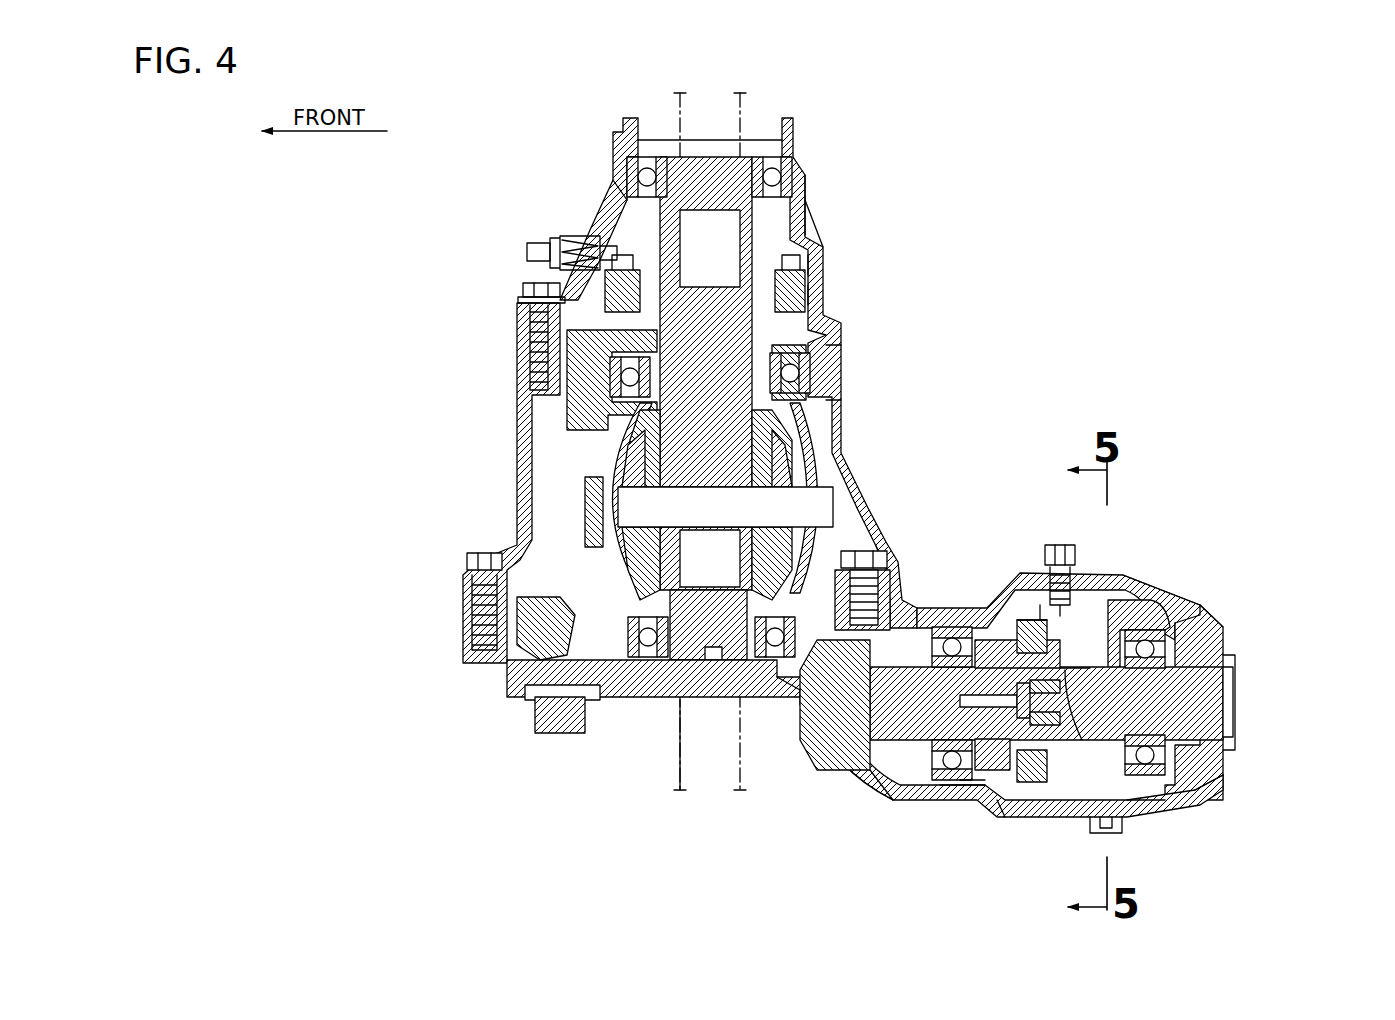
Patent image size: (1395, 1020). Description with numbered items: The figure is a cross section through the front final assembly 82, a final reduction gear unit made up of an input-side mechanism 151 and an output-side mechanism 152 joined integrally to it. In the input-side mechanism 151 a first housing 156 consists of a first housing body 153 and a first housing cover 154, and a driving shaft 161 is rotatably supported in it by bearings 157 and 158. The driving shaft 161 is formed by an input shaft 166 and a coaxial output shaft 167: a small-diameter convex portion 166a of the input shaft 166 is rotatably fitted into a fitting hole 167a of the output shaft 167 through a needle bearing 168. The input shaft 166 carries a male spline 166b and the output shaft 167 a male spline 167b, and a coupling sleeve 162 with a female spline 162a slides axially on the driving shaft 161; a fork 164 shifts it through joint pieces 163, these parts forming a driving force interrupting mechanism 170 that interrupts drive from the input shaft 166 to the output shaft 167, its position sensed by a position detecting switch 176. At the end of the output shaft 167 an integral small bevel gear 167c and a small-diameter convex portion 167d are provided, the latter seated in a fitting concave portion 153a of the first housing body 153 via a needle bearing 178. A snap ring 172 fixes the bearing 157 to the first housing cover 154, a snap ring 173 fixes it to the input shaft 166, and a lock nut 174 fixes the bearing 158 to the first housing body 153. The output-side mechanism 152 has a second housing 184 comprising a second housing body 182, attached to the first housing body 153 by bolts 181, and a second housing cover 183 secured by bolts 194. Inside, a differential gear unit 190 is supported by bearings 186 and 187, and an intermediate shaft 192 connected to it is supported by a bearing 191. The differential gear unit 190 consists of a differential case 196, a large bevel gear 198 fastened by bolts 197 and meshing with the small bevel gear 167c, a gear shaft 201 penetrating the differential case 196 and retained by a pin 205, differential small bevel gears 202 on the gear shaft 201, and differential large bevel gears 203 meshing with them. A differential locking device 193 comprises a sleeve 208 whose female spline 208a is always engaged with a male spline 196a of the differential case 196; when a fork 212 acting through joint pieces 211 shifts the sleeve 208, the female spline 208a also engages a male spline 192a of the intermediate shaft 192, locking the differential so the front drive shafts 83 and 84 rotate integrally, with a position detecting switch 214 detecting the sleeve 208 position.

The front final assembly 82 is at (378, 302).
The front drive shaft 83 is at (680, 785).
The front drive shaft 84 is at (676, 97).
The input-side mechanism 151 is at (1130, 582).
The output-side mechanism 152 is at (852, 350).
The first housing body 153 is at (850, 775).
The fitting concave portion 153a is at (800, 695).
The first housing cover 154 is at (1205, 803).
The first housing 156 is at (1232, 640).
The bearing 157 is at (1195, 605).
The bearing 158 is at (892, 612).
The driving shaft 161 is at (1235, 690).
The coupling sleeve 162 is at (1045, 790).
The female spline 162a is at (1065, 782).
The joint pieces 163 is at (1030, 620).
The fork 164 is at (1035, 620).
The input shaft 166 is at (1208, 710).
The small-diameter convex portion 166a is at (1003, 815).
The male spline 166b is at (1115, 822).
The output shaft 167 is at (920, 770).
The fitting hole 167a is at (1080, 660).
The male spline 167b is at (962, 790).
The small bevel gear 167c is at (890, 790).
The small-diameter convex portion 167d is at (772, 720).
The needle bearing 168 is at (955, 627).
The driving force interrupting mechanism 170 is at (1042, 615).
The snap ring 172 is at (1160, 808).
The snap ring 173 is at (1175, 742).
The lock nut 174 is at (955, 790).
The position detecting switch 176 is at (1063, 543).
The needle bearing 178 is at (822, 785).
The bolt 181 is at (465, 580).
The second housing body 182 is at (815, 395).
The second housing cover 183 is at (808, 185).
The second housing 184 is at (515, 395).
The bearing 186 is at (658, 620).
The bearing 187 is at (815, 385).
The differential gear unit 190 is at (600, 445).
The bearing 191 is at (797, 168).
The intermediate shaft 192 is at (630, 255).
The male spline 192a is at (812, 215).
The differential locking device 193 is at (610, 275).
The bolt 194 is at (540, 310).
The differential case 196 is at (605, 455).
The male spline 196a is at (835, 345).
The bolt 197 is at (875, 545).
The large bevel gear 198 is at (520, 672).
The gear shaft 201 is at (835, 505).
The differential small bevel gear 202 is at (835, 470).
The differential large bevel gear 203 is at (832, 440).
The pin 205 is at (585, 500).
The sleeve 208 is at (818, 255).
The female spline 208a is at (820, 265).
The joint pieces 211 is at (612, 290).
The fork 212 is at (818, 295).
The position detecting switch 214 is at (535, 255).